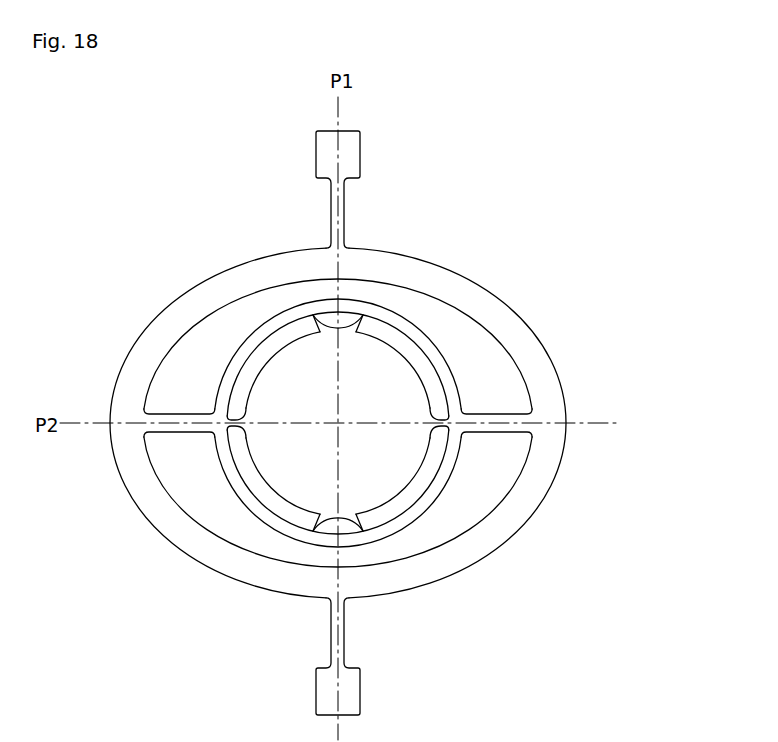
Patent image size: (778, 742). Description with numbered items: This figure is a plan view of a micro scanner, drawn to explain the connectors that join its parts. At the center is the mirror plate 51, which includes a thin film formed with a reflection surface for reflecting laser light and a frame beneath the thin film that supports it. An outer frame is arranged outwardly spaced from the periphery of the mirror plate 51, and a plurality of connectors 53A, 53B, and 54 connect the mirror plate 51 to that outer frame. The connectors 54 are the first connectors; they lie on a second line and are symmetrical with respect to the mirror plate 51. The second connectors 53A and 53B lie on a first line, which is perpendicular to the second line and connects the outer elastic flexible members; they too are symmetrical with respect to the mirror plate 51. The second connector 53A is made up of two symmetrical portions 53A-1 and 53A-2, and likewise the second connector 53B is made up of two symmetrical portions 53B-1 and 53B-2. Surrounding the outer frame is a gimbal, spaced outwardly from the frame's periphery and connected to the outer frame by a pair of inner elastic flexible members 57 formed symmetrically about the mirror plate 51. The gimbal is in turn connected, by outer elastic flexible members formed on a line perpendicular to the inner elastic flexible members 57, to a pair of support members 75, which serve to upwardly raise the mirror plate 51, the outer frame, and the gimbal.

The mirror plate 51 is at (390, 378).
The second connector 53A is at (538, 197).
The symmetrical portion 53A-1 is at (346, 321).
The symmetrical portion 53A-2 is at (386, 323).
The second connector 53B is at (538, 650).
The symmetrical portion 53B-1 is at (346, 526).
The symmetrical portion 53B-2 is at (386, 523).
The first connector 54 is at (232, 410).
The inner elastic flexible member 57 is at (183, 432).
The support member 75 is at (350, 143).